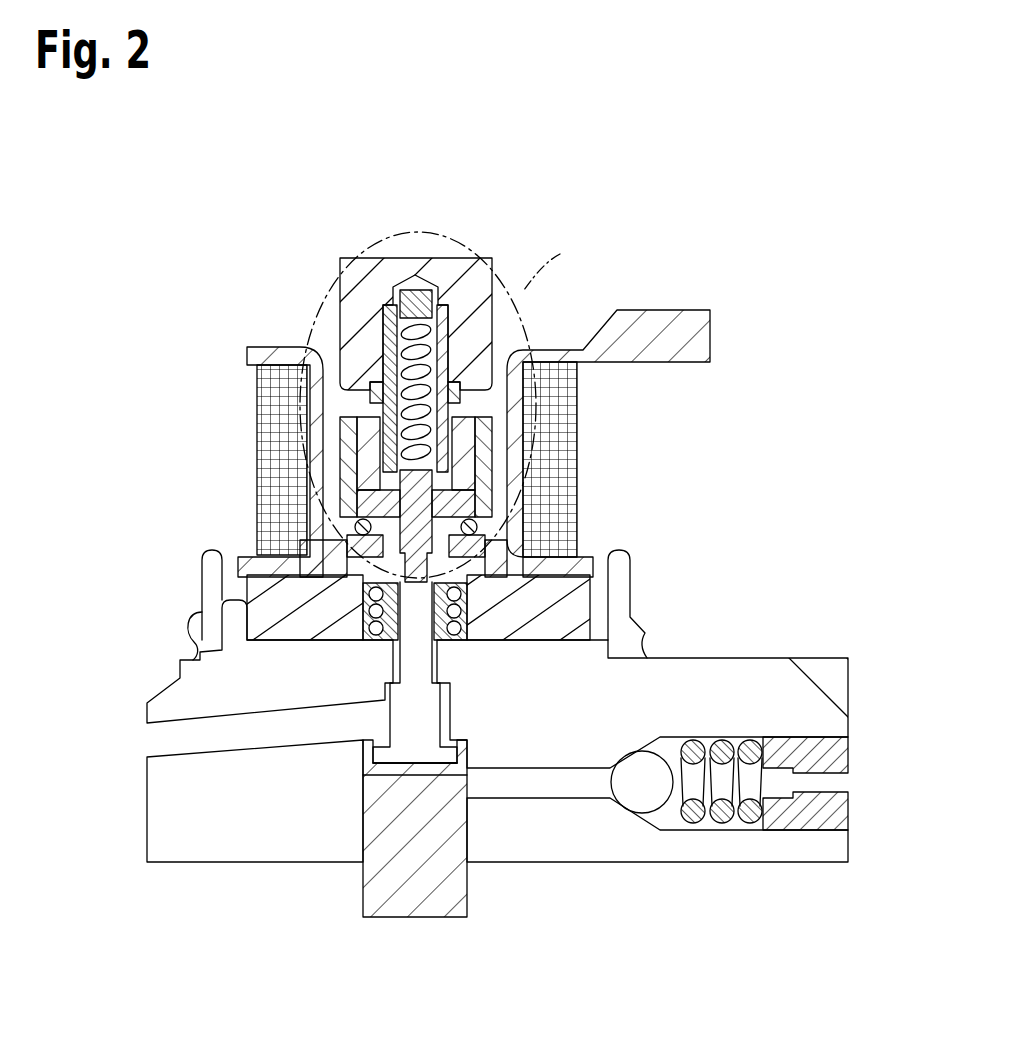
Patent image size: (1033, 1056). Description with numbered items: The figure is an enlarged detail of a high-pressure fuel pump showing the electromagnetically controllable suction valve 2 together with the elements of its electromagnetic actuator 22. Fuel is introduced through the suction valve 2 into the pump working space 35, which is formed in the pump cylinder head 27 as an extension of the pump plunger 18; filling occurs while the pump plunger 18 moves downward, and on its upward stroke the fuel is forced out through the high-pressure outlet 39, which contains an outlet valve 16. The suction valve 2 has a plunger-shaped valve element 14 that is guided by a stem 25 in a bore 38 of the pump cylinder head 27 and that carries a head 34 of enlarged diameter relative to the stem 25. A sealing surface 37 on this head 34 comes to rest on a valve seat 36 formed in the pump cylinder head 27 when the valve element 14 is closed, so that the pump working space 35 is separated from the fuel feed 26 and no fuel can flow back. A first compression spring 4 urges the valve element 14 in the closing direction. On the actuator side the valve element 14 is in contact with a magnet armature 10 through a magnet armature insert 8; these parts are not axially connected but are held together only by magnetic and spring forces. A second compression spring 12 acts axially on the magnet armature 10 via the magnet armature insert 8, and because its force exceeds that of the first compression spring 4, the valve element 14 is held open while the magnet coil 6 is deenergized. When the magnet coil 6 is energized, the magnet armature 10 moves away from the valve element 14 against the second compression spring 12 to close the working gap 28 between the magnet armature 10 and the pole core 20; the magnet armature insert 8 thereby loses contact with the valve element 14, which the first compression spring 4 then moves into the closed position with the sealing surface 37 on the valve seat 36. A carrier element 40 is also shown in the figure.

The suction valve 2 is at (798, 296).
The first compression spring 4 is at (580, 612).
The magnet coil 6 is at (330, 452).
The magnet armature insert 8 is at (340, 523).
The magnet armature 10 is at (372, 487).
The second compression spring 12 is at (332, 376).
The valve element 14 is at (252, 680).
The outlet valve 16 is at (712, 828).
The pump plunger 18 is at (387, 887).
The pole core 20 is at (345, 276).
The electromagnetic actuator 22 is at (352, 243).
The stem 25 is at (462, 657).
The fuel feed 26 is at (212, 733).
The pump cylinder head 27 is at (175, 793).
The working gap 28 is at (335, 407).
The head 34 is at (344, 763).
The pump working space 35 is at (475, 797).
The valve seat 36 is at (441, 790).
The sealing surface 37 is at (298, 757).
The bore 38 is at (457, 680).
The high-pressure outlet 39 is at (806, 783).
The carrier element 40 is at (198, 613).